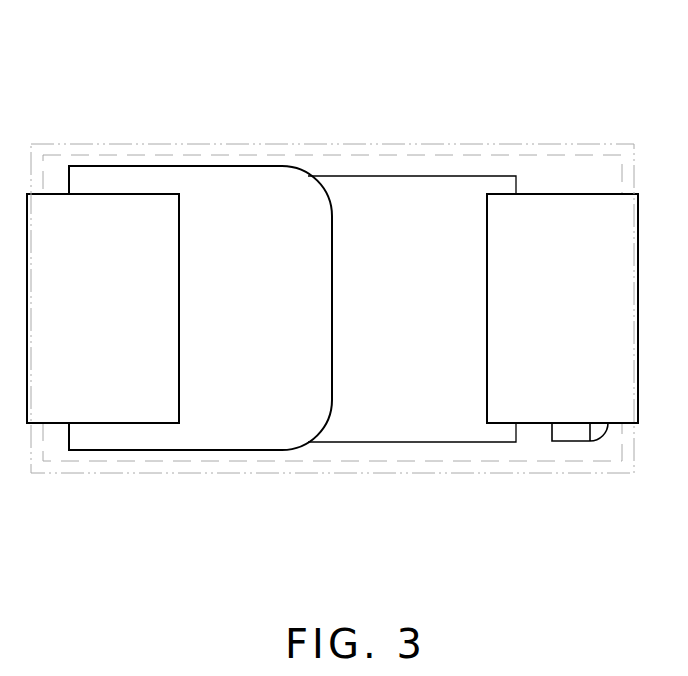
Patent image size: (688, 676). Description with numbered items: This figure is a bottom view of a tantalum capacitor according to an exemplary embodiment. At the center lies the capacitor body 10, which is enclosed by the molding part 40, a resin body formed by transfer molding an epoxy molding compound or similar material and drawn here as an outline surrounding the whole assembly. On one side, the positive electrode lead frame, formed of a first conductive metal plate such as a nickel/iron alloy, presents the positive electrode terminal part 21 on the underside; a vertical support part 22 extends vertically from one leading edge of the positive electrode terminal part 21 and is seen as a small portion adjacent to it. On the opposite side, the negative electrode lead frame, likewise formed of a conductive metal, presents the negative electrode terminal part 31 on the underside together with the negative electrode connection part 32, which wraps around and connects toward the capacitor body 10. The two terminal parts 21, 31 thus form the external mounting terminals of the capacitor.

The capacitor body 10 is at (396, 432).
The positive electrode terminal part 21 is at (536, 413).
The vertical support part 22 is at (574, 436).
The negative electrode terminal part 31 is at (101, 411).
The negative electrode connection part 32 is at (234, 432).
The molding part 40 is at (564, 148).